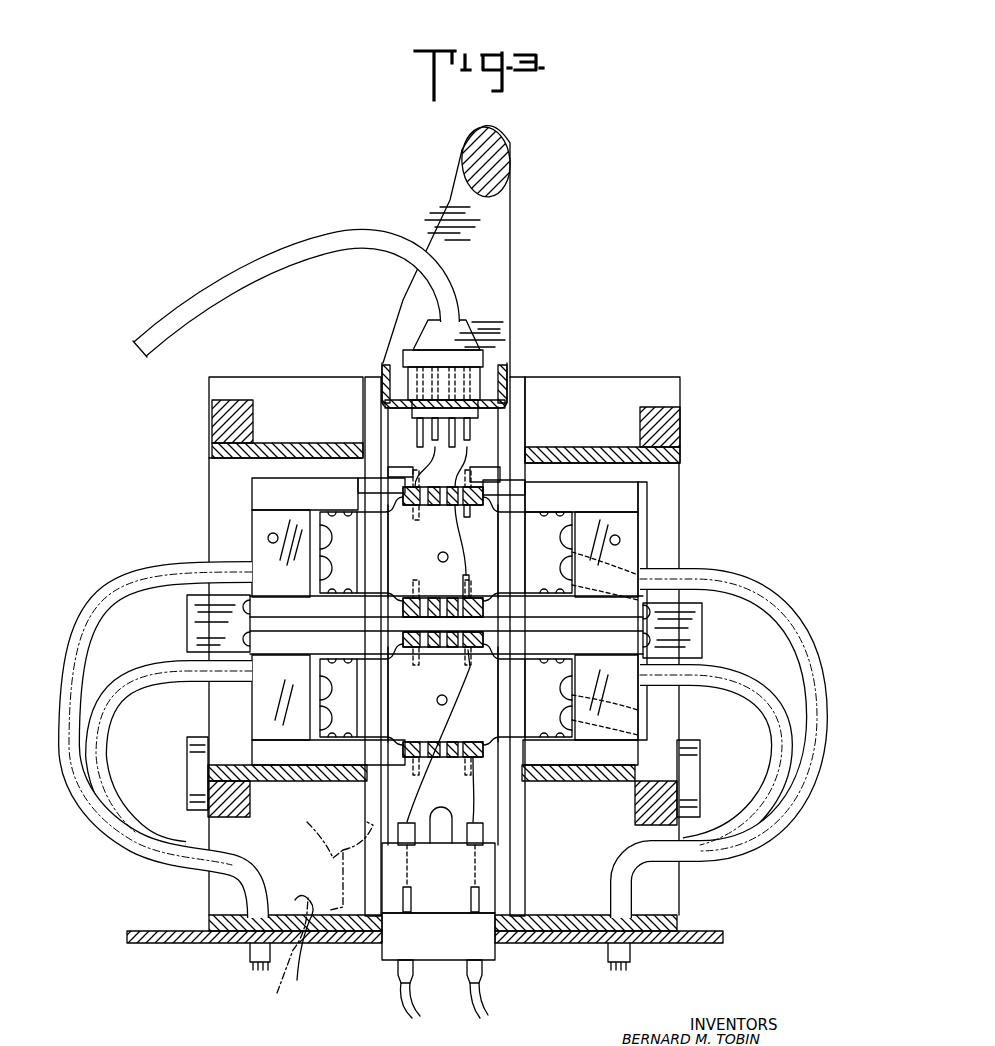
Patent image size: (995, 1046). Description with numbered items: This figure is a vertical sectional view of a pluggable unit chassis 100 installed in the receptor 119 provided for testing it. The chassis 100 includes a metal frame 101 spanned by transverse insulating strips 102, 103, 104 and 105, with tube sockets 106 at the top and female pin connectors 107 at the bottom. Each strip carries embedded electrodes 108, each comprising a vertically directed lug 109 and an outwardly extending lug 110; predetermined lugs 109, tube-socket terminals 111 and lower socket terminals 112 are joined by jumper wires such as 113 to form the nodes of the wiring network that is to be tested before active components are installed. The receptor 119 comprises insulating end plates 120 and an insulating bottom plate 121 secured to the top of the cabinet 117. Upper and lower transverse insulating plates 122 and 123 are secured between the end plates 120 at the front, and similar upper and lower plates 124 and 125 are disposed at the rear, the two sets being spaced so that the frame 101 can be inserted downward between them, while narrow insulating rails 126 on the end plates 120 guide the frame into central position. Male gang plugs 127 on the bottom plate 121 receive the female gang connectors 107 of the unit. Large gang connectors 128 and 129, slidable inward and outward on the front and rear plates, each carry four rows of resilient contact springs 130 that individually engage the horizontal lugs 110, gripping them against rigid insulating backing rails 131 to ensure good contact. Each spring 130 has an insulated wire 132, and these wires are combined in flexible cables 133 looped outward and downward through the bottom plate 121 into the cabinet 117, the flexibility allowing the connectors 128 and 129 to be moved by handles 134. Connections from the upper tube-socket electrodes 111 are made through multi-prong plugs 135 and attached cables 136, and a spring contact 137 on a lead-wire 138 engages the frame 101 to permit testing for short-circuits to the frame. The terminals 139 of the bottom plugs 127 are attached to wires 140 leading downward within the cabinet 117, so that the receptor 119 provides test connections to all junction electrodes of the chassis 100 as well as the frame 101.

The chassis structure 100 is at (524, 240).
The frame 101 is at (500, 312).
The transverse insulating strip 102 is at (421, 512).
The transverse insulating strip 103 is at (440, 580).
The transverse insulating strip 104 is at (418, 650).
The transverse insulating strip 105 is at (435, 693).
The tube socket 106 is at (488, 434).
The female pin connector 107 is at (483, 870).
The electrode 108 is at (466, 507).
The vertically directed lug 109 is at (480, 482).
The outwardly extending lug 110 is at (503, 487).
The tube-socket terminal 111 is at (420, 428).
The lower socket terminal 112 is at (400, 823).
The jumper wire 113 is at (462, 698).
The cabinet 117 is at (707, 935).
The receptor 119 is at (662, 375).
The insulating end plate 120 is at (668, 399).
The insulating bottom plate 121 is at (540, 923).
The upper transverse insulating plate 122 is at (688, 460).
The lower transverse insulating plate 123 is at (580, 784).
The upper insulating plate 124 is at (210, 452).
The lower insulating plate 125 is at (287, 773).
The insulating rail 126 is at (372, 383).
The male gang plug 127 is at (495, 952).
The large gang connector 128 is at (626, 556).
The large gang connector 129 is at (256, 552).
The resilient contact spring 130 is at (467, 573).
The rigid insulating backing rail 131 is at (503, 492).
The insulated wire 132 is at (446, 621).
The flexible cable 133 is at (85, 753).
The handle 134 is at (197, 617).
The multi-prong plug 135 is at (472, 347).
The cable 136 is at (236, 270).
The spring contact 137 is at (320, 863).
The lead-wire 138 is at (285, 954).
The terminal 139 is at (398, 968).
The wire 140 is at (470, 1008).